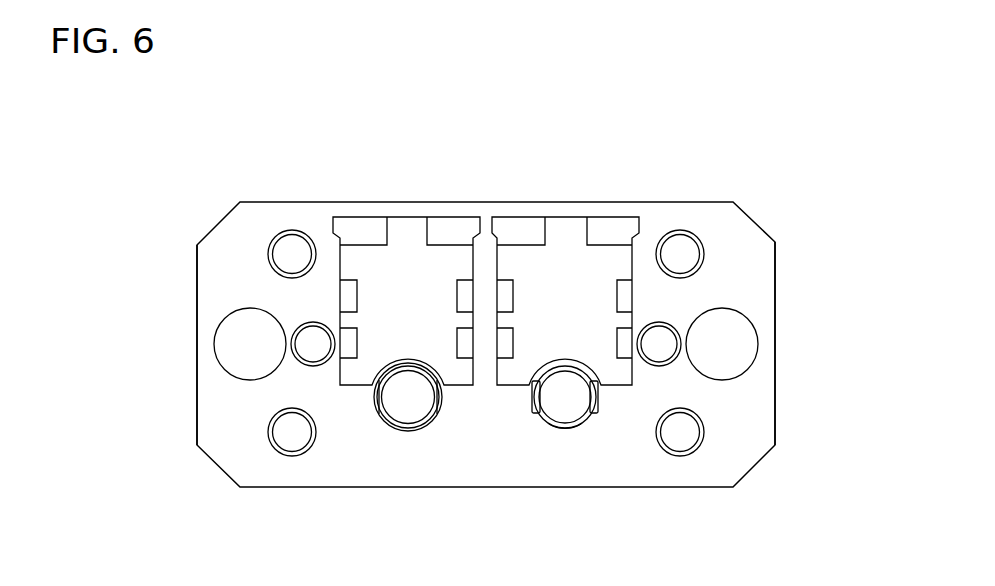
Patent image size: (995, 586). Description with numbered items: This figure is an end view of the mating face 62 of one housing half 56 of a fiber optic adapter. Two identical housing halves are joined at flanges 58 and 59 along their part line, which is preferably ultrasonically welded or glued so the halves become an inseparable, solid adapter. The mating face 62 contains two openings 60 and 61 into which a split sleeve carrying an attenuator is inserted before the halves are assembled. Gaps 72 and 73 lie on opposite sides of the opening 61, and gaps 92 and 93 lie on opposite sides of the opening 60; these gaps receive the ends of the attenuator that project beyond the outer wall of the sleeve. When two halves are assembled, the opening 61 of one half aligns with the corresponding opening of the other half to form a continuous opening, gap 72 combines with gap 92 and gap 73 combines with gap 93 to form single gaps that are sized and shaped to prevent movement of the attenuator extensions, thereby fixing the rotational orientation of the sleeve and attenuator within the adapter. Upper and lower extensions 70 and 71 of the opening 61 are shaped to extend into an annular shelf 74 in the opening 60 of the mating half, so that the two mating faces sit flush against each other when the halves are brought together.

The housing half 56 is at (402, 144).
The flange 58 is at (180, 375).
The flange 59 is at (792, 396).
The opening 60 is at (408, 413).
The opening 61 is at (569, 412).
The face 62 is at (488, 470).
The upper extension of opening 70 is at (552, 427).
The lower extension of opening 71 is at (564, 368).
The gap 72 is at (535, 393).
The gap 73 is at (596, 408).
The annular shelf 74 is at (408, 368).
The gap 92 is at (437, 408).
The gap 93 is at (380, 408).